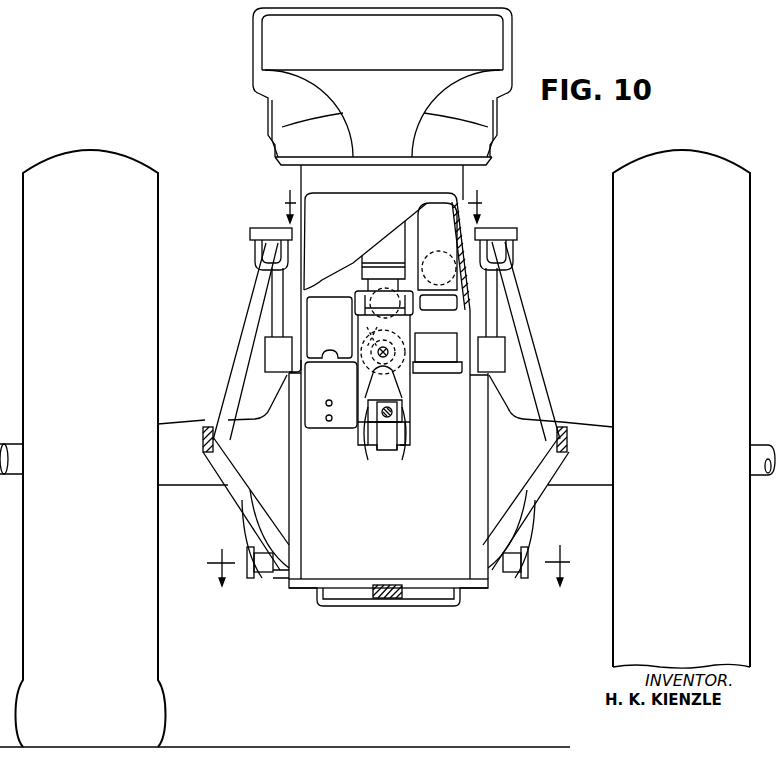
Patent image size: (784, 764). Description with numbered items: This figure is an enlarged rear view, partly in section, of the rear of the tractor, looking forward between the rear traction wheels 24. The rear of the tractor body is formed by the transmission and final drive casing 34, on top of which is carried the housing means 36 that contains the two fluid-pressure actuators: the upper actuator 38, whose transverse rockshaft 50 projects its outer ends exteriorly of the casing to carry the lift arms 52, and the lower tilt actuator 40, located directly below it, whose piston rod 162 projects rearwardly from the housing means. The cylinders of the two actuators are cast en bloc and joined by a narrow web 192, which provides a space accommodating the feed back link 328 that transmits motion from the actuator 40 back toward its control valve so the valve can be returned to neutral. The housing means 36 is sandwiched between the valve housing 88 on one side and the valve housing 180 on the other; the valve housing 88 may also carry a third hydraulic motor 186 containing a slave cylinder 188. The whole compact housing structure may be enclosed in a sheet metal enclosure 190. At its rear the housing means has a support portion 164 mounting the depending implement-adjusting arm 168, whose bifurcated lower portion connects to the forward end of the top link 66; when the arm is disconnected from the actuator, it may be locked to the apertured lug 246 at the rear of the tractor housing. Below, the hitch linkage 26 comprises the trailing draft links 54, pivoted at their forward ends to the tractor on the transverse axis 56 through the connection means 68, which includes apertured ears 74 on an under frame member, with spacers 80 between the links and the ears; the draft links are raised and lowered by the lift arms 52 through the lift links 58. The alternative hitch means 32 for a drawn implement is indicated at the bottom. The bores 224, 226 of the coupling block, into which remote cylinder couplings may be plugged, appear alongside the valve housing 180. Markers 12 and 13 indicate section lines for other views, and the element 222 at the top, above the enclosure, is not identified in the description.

The section line 12- 12 is at (393, 564).
The section line 13- 13 is at (384, 206).
The rear traction wheels 24 is at (164, 703).
The hitch linkage 26 is at (565, 468).
The alternative hitch means 32 is at (345, 612).
The transmission and final drive casing 34 is at (415, 532).
The housing means 36 is at (350, 278).
The first power-operated fluid-pressure actuator 38 is at (384, 290).
The second power-operated fluid-pressure actuator 40 is at (400, 380).
The transverse rockshaft 50 is at (292, 362).
The lift arms 52 is at (256, 258).
The trailing draft links 54 is at (217, 466).
The transverse axis 56 is at (246, 562).
The lift links 58 is at (237, 392).
The top link 66 is at (397, 413).
The connection means 68 is at (504, 590).
The apertured ears 74 is at (250, 547).
The spacers 80 is at (262, 572).
The valve housing 88 is at (440, 353).
The piston rod 162 is at (375, 370).
The support portion 164 is at (373, 285).
The implement-adjusting member 168 is at (413, 425).
The valve housing 180 is at (313, 317).
The third actuator 186 is at (433, 210).
The slave cylinder 188 is at (450, 255).
The sheet metal enclosure 190 is at (325, 203).
The narrow web 192 is at (396, 333).
The seat 222 is at (500, 55).
The bore 224 is at (325, 404).
The bore 226 is at (329, 422).
The apertured lug 246 is at (398, 452).
The feed back link 328 is at (372, 333).